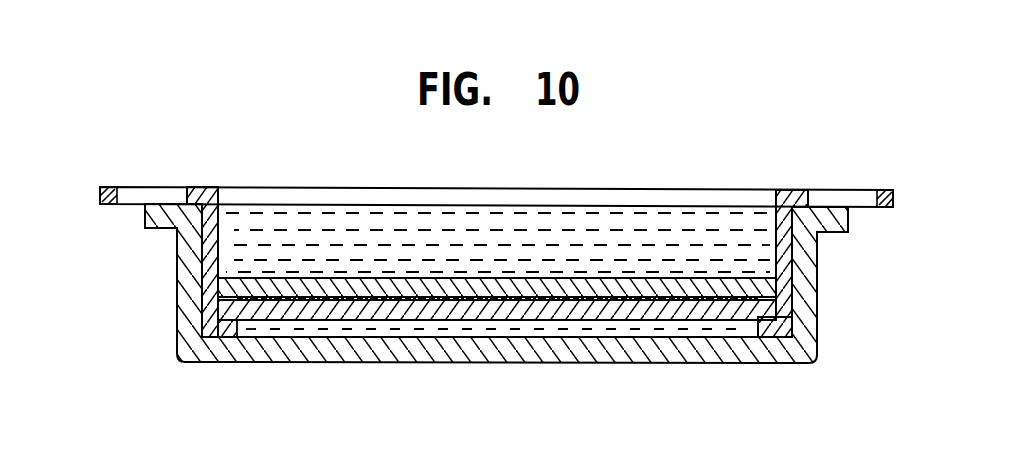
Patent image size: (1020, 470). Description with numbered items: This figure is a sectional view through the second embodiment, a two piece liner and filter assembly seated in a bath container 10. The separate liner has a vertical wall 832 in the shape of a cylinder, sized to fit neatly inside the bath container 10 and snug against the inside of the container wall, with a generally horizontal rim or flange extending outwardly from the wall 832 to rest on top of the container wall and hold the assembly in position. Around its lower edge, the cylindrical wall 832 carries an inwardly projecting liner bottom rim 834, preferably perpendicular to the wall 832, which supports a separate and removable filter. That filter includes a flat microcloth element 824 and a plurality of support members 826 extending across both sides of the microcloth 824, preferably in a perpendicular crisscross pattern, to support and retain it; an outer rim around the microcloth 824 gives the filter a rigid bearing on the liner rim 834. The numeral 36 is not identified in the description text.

The bath container 10 is at (177, 239).
The cover plate 36 is at (894, 198).
The vertical wall 832 is at (212, 297).
The support members 826 is at (347, 300).
The flat microcloth element 824 is at (442, 298).
The liner bottom rim 834 is at (770, 330).